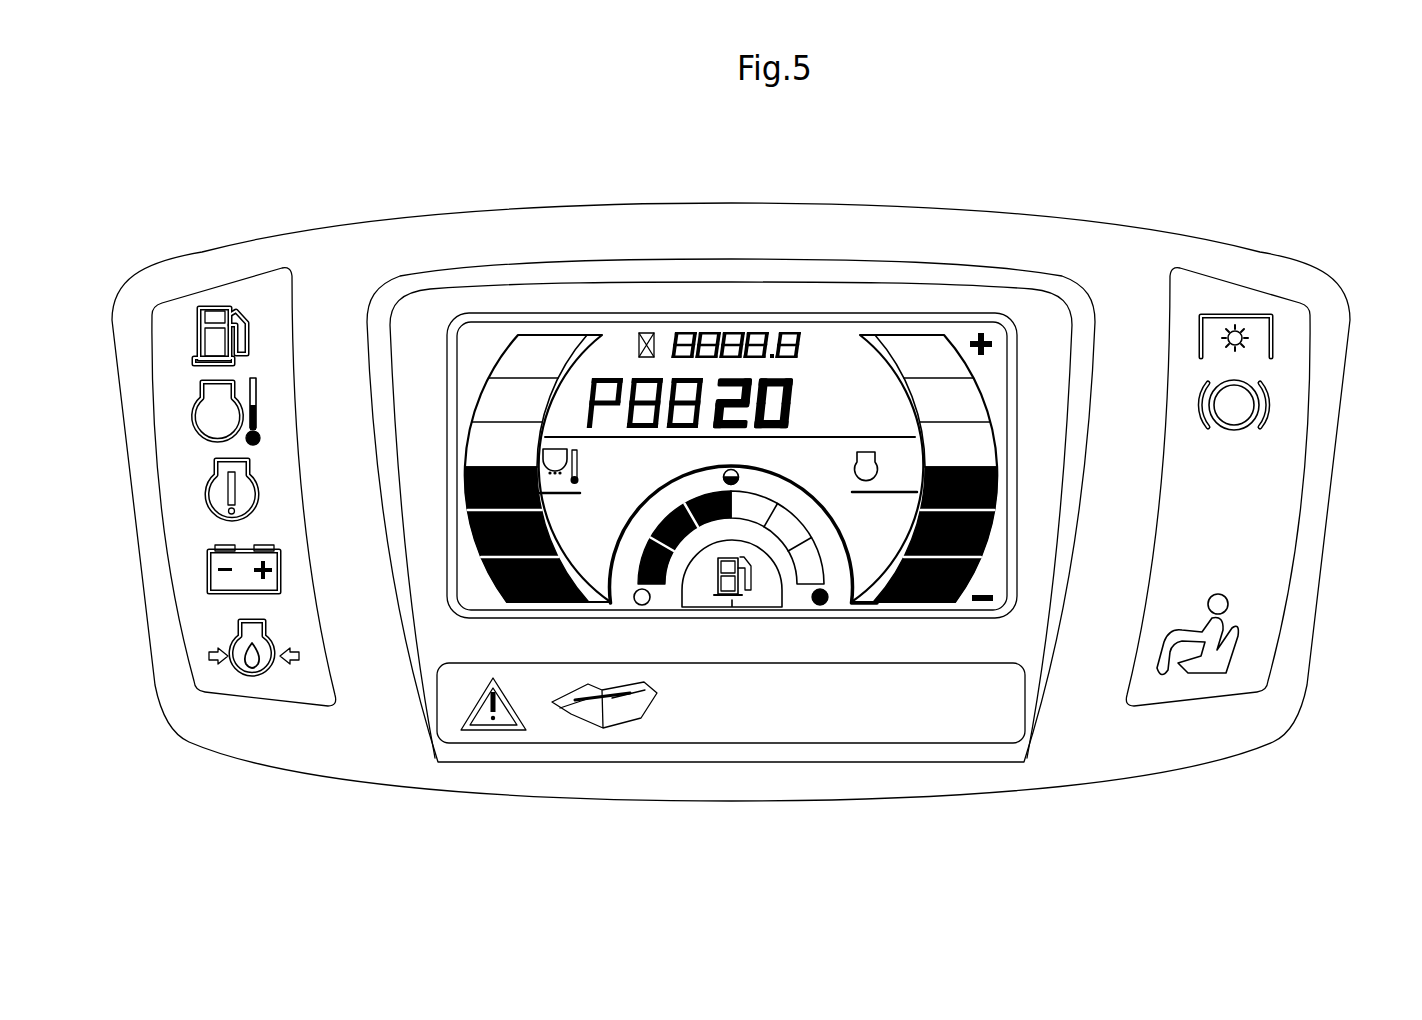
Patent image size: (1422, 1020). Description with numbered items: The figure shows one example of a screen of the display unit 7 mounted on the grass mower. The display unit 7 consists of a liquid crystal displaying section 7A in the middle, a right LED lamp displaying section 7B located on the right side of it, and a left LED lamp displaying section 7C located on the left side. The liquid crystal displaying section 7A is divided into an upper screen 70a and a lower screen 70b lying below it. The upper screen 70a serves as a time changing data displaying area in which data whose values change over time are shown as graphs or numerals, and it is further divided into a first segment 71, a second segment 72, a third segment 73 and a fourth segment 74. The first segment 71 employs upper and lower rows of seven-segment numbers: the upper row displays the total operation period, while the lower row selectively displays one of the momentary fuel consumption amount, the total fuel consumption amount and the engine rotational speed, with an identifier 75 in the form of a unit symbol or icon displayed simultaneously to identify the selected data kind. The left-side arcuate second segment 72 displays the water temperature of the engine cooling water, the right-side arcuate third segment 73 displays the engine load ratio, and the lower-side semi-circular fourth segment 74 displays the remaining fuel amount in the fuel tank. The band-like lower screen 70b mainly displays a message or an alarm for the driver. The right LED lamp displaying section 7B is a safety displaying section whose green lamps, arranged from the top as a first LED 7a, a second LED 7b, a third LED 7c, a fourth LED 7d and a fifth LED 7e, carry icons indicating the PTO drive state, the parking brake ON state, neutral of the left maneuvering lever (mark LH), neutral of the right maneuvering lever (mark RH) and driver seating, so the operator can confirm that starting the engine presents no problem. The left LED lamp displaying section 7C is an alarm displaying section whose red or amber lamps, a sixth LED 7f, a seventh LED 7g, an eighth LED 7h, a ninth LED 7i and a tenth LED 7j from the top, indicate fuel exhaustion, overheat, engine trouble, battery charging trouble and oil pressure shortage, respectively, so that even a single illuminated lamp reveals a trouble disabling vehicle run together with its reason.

The display unit 7 is at (1093, 187).
The liquid crystal displaying section 7A is at (834, 256).
The right LED lamp displaying section 7B is at (1243, 282).
The left LED lamp displaying section 7C is at (210, 282).
The first LED 7a is at (1272, 335).
The second LED 7b is at (1270, 405).
The third LED 7c is at (1257, 478).
The fourth LED 7d is at (1253, 549).
The fifth LED 7e is at (1233, 652).
The sixth LED 7f is at (196, 338).
The seventh LED 7g is at (188, 419).
The eighth LED 7h is at (206, 503).
The ninth LED 7i is at (209, 572).
The tenth LED 7j is at (208, 657).
The upper screen 70a is at (924, 312).
The lower screen 70b is at (837, 745).
The first segment 71 is at (622, 362).
The second segment 72 is at (557, 331).
The third segment 73 is at (985, 393).
The fourth segment 74 is at (791, 592).
The identifier 75 is at (867, 497).